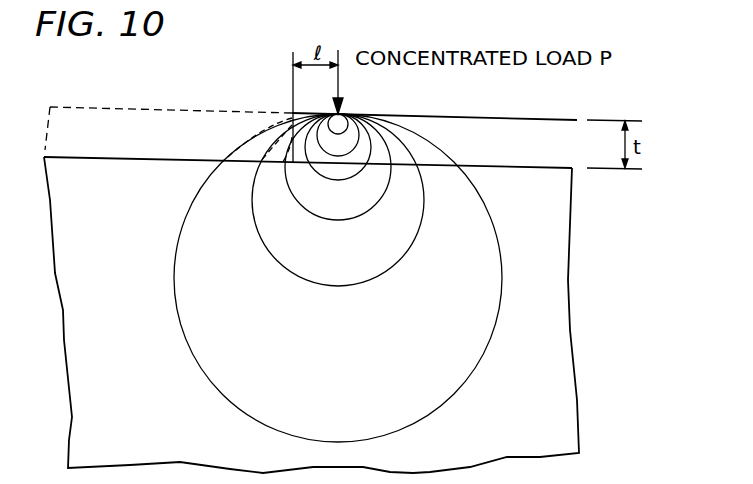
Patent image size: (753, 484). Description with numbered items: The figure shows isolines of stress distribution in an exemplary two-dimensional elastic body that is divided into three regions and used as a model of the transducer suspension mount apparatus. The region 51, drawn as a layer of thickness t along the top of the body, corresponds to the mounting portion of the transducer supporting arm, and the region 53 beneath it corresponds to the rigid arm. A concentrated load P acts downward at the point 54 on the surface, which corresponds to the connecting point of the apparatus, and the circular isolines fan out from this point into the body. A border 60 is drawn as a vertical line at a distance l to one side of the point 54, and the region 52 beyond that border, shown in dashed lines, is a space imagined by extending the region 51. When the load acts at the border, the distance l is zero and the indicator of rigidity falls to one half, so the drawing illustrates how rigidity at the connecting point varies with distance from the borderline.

The region 51 is at (530, 122).
The region 52 is at (164, 133).
The region 53 is at (562, 322).
The point 54 is at (345, 112).
The border 60 is at (289, 109).